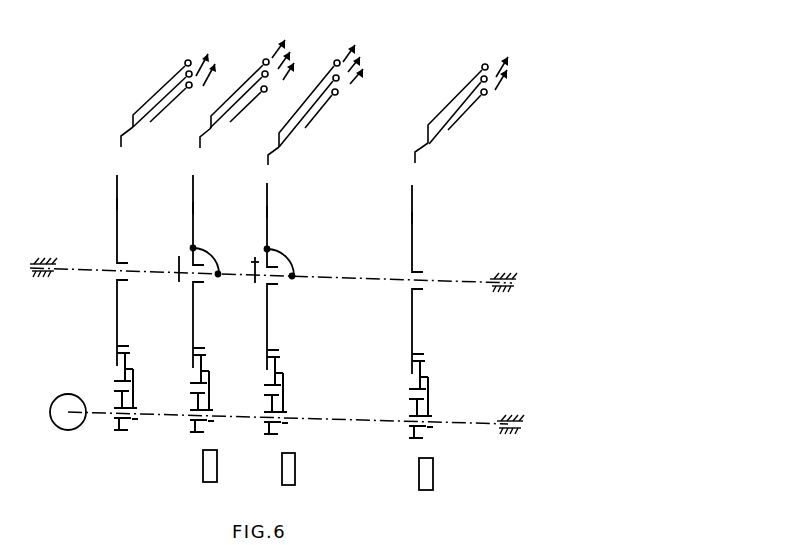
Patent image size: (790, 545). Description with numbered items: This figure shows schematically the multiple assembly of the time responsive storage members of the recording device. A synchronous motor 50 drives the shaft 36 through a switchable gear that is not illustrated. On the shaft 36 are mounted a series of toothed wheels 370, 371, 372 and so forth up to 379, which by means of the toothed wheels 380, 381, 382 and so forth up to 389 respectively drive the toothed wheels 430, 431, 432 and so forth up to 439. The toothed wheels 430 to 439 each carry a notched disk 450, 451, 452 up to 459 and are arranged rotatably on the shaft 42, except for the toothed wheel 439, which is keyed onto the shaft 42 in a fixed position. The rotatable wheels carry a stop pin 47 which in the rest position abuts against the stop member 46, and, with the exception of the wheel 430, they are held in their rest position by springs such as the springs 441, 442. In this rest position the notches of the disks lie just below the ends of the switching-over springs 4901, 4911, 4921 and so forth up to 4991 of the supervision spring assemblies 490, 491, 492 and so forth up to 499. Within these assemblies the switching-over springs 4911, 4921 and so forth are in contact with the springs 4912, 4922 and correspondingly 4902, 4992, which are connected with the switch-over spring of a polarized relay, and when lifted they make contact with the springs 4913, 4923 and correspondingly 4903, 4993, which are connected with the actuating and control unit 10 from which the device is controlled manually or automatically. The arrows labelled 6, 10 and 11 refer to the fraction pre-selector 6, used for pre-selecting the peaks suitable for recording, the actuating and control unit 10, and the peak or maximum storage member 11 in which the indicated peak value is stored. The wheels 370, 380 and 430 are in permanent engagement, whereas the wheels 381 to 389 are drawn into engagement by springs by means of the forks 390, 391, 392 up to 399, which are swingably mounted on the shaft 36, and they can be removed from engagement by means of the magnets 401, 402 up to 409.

The fraction pre-selector 6 is at (328, 54).
The actuating and control unit 10 is at (367, 55).
The peak or maximum storage member 11 is at (337, 68).
The shaft 36 is at (338, 422).
The shaft 42 is at (345, 278).
The stop member 46 is at (177, 268).
The stop pin 47 is at (179, 257).
The synchronous motor 50 is at (51, 421).
The toothed wheel 370 is at (122, 430).
The toothed wheel 371 is at (203, 432).
The toothed wheel 372 is at (278, 434).
The toothed wheel 379 is at (422, 437).
The toothed wheel 380 is at (120, 363).
The toothed wheel 381 is at (198, 363).
The toothed wheel 382 is at (275, 367).
The toothed wheel 389 is at (423, 375).
The fork 390 is at (134, 382).
The fork 391 is at (210, 385).
The fork 392 is at (285, 386).
The fork 399 is at (430, 389).
The magnet 401 is at (203, 470).
The magnet 402 is at (282, 473).
The magnet 409 is at (435, 483).
The toothed wheel 430 is at (143, 268).
The toothed wheel 431 is at (220, 271).
The toothed wheel 432 is at (294, 275).
The toothed wheel 439 is at (439, 279).
The spring 441 is at (200, 250).
The spring 442 is at (287, 250).
The disk 450 is at (117, 204).
The disk 451 is at (193, 208).
The disk 452 is at (267, 213).
The disk 459 is at (412, 220).
The supervision spring assembly 490 is at (130, 104).
The supervision spring assembly 491 is at (203, 113).
The supervision spring assembly 492 is at (285, 117).
The supervision spring assembly 499 is at (426, 120).
The switching-over spring 4901 is at (121, 147).
The spring 4902 is at (141, 128).
The spring 4903 is at (146, 103).
The switching-over spring 4911 is at (200, 149).
The spring 4912 is at (214, 132).
The spring 4913 is at (219, 109).
The switching-over spring 4921 is at (268, 163).
The spring 4922 is at (289, 138).
The spring 4923 is at (288, 117).
The switching-over spring 4991 is at (415, 164).
The spring 4992 is at (437, 134).
The spring 4993 is at (432, 117).